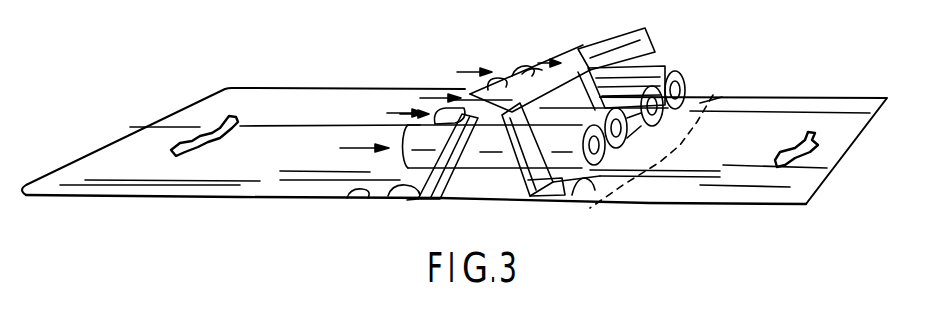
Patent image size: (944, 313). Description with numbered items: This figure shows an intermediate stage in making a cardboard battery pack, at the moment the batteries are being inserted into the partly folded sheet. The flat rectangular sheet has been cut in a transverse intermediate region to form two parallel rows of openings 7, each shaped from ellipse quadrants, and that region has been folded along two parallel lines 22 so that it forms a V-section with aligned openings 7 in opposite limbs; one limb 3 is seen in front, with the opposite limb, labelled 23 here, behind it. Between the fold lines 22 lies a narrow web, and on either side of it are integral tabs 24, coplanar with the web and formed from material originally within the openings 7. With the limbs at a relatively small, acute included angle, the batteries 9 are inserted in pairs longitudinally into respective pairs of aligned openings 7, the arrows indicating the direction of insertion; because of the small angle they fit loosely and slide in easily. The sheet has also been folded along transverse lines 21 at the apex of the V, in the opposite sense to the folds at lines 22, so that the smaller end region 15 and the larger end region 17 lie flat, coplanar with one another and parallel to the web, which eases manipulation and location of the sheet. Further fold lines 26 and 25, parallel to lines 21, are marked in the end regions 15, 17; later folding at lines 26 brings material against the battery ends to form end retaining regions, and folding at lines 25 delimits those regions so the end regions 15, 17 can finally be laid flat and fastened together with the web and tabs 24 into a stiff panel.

The limb of the V-section region 3 is at (517, 193).
The openings 7 is at (666, 38).
The disc wheels 9 is at (675, 72).
The smaller end region of the sheet 15 is at (826, 123).
The larger end region of the sheet 17 is at (278, 106).
The transverse fold lines 21 is at (447, 188).
The fold lines of the web 22 is at (532, 72).
The guide plate 23 is at (622, 38).
The integral tabs 24 is at (483, 97).
The fold lines delimiting the end retaining regions 25 is at (352, 198).
The fold lines for the end retaining regions 26 is at (388, 196).